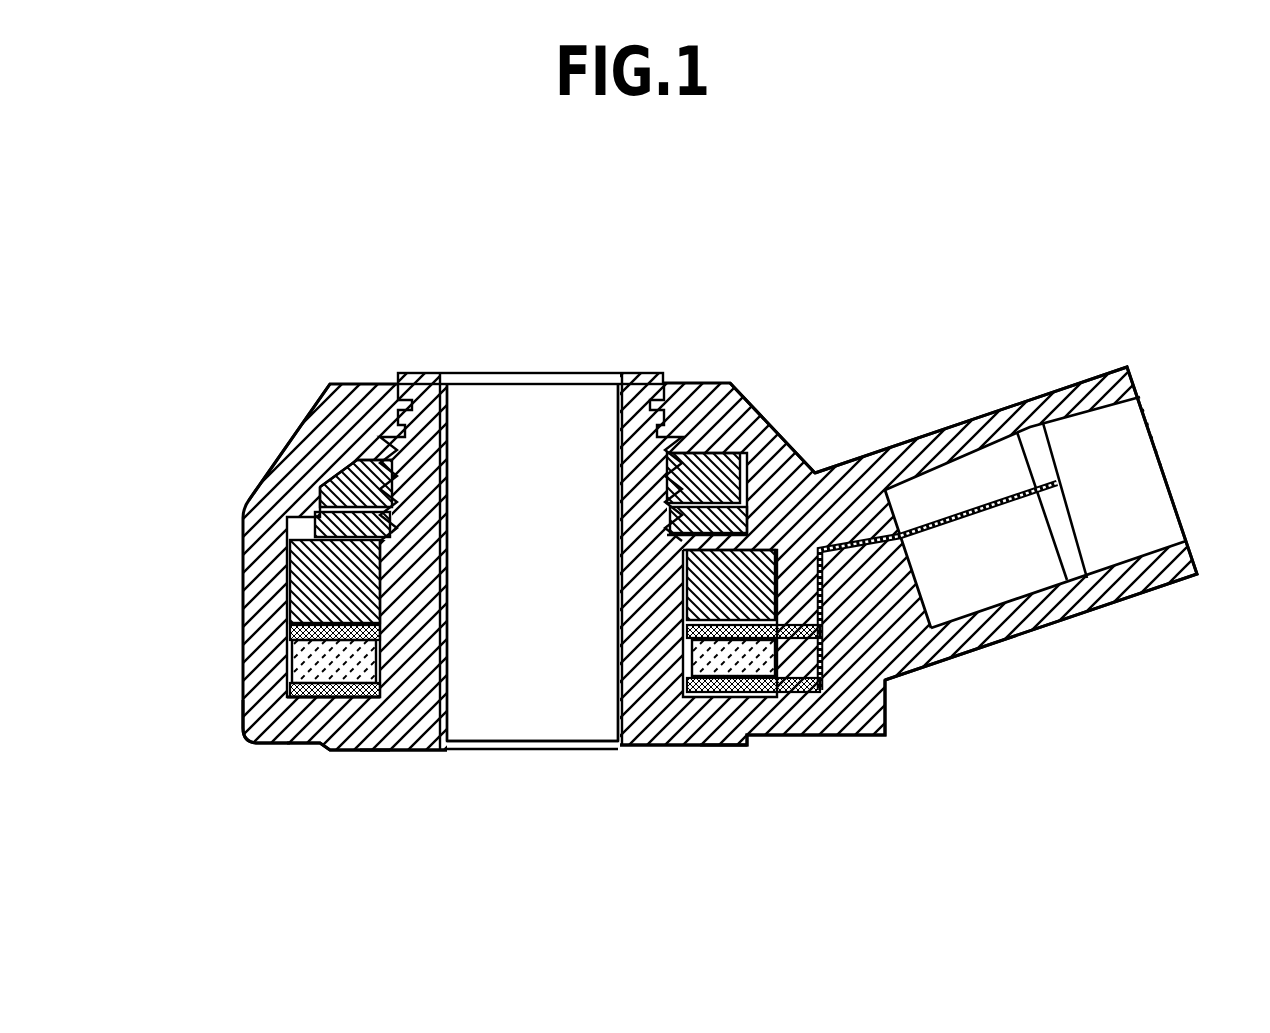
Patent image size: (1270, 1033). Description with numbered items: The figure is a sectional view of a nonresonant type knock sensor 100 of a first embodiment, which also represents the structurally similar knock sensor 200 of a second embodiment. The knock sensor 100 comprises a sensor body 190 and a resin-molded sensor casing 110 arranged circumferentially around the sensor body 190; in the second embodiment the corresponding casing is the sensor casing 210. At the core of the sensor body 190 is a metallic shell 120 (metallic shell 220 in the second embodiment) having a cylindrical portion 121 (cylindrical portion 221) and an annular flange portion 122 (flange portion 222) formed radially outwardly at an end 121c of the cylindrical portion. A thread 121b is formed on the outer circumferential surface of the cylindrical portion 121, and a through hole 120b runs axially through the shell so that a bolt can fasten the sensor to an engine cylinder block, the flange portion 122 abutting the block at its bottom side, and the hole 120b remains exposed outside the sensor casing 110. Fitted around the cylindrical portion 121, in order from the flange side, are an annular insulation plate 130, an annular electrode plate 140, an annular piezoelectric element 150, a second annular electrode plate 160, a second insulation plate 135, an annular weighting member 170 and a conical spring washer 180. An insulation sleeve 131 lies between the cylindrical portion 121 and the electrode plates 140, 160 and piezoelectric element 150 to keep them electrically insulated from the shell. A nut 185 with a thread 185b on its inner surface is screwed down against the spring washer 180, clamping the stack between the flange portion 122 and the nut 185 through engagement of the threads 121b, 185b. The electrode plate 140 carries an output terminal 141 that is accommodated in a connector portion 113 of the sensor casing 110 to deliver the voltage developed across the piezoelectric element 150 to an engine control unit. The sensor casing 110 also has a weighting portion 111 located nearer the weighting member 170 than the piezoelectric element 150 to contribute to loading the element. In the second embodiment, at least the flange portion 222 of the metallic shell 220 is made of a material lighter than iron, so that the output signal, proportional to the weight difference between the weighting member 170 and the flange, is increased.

The knock sensor 100 is at (661, 544).
The knock sensor 200 is at (1048, 262).
The sensor casing 110 is at (720, 512).
The sensor casing 210 is at (700, 377).
The weighting portion 111 is at (322, 457).
The connector portion 113 is at (1107, 372).
The metallic shell 120 is at (792, 773).
The metallic shell 220 is at (748, 725).
The through hole 120b is at (455, 680).
The cylindrical portion 121 is at (435, 405).
The cylindrical portion 221 is at (427, 387).
The thread 121b is at (797, 382).
The end of cylindrical portion 121c is at (650, 746).
The flange portion 122 is at (312, 777).
The flange portion 222 is at (332, 746).
The insulation plate 130 is at (245, 712).
The insulation sleeve 131 is at (393, 750).
The insulation plate 135 is at (290, 612).
The electrode plate 140 is at (824, 735).
The output terminal 141 is at (1043, 463).
The piezoelectric element 150 is at (300, 660).
The electrode plate 160 is at (900, 670).
The weighting member 170 is at (857, 468).
The spring washer 180 is at (305, 500).
The nut 185 is at (358, 470).
The thread 185b is at (446, 457).
The sensor body 190 is at (290, 522).